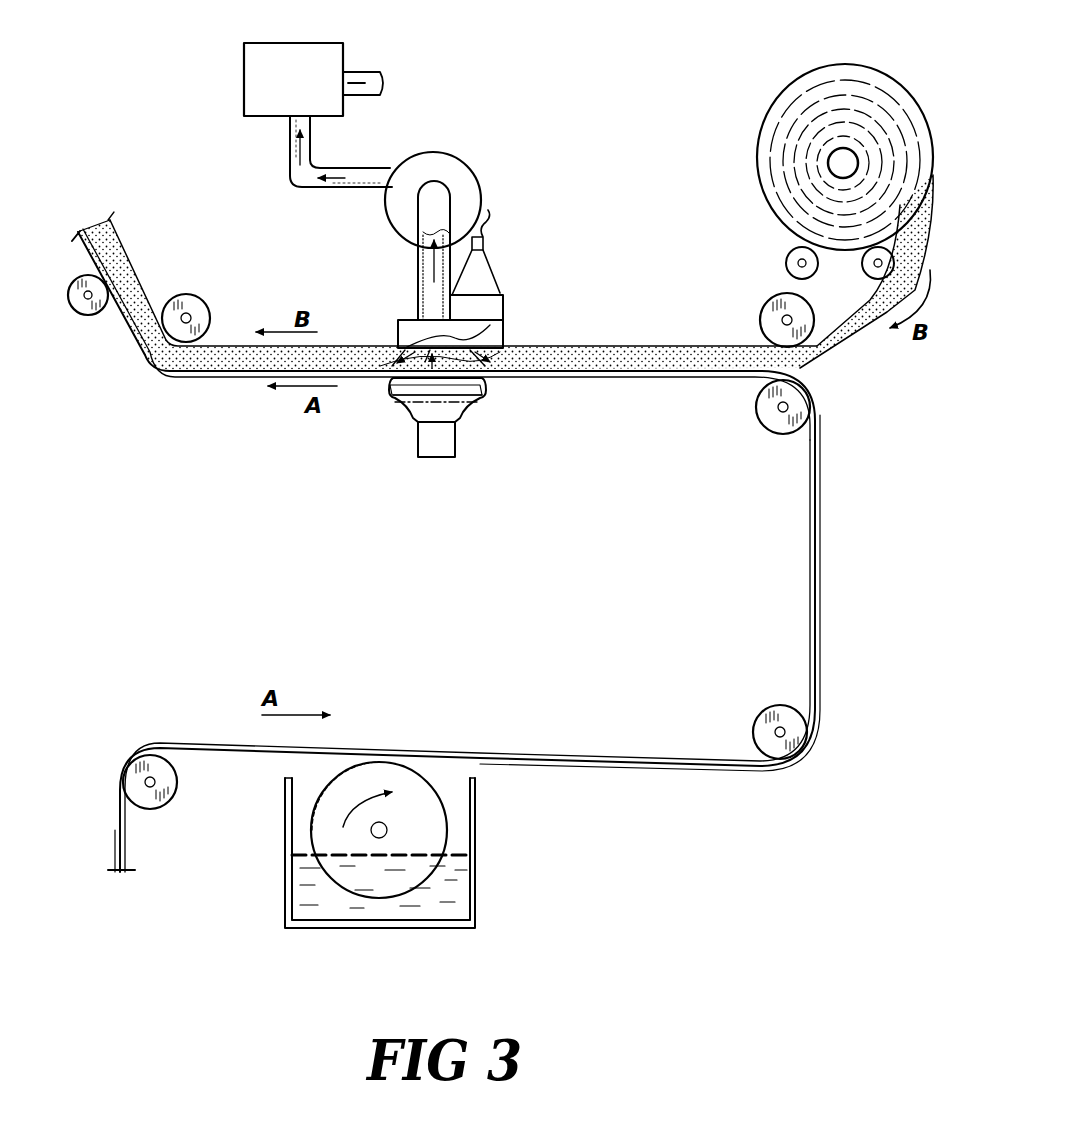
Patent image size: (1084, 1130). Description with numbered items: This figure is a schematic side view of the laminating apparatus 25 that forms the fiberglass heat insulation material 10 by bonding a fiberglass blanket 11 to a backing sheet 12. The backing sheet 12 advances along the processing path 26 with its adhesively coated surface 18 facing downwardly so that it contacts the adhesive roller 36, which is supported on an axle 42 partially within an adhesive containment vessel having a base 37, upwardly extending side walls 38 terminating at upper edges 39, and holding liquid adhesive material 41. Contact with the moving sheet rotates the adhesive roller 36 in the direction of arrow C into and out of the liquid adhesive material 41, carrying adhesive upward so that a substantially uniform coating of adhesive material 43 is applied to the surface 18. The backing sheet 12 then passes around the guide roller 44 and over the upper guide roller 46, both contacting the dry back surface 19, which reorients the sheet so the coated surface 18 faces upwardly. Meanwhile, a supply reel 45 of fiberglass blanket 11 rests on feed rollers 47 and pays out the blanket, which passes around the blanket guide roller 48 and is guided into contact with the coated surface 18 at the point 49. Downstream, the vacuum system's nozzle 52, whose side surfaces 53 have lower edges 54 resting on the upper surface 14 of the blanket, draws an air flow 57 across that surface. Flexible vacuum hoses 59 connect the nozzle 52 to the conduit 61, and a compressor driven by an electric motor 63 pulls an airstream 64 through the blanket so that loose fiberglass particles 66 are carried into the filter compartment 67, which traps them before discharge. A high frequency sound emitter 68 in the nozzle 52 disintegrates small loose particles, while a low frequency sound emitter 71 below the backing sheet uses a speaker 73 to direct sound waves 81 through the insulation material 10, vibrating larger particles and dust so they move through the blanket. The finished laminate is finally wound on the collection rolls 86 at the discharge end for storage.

The fiberglass heat insulation material 10 is at (232, 340).
The fiberglass blanket 11 is at (849, 135).
The backing sheet 12 is at (806, 495).
The upper surface 14 is at (120, 257).
The adhesively coated surface 18 is at (712, 378).
The back surface 19 is at (388, 762).
The laminating apparatus 25 is at (439, 842).
The processing path 26 is at (140, 746).
The adhesive roller 36 is at (401, 804).
The base 37 is at (385, 928).
The side walls 38 is at (475, 848).
The upper edges 39 is at (288, 778).
The liquid adhesive material 41 is at (330, 914).
The axle 42 is at (387, 830).
The coating of adhesive material 43 is at (826, 452).
The guide roller 44 is at (755, 730).
The supply reel 45 is at (856, 100).
The upper guide roller 46 is at (765, 420).
The feed rollers 47 is at (785, 258).
The blanket guide roller 48 is at (760, 333).
The point of contact 49 is at (806, 371).
The nozzle 52 is at (412, 320).
The side surfaces 53 is at (508, 318).
The lower edge 54 is at (460, 332).
The air flow 57 is at (390, 222).
The vacuum hoses 59 is at (447, 280).
The conduit 61 is at (445, 165).
The electric motor 63 is at (458, 188).
The airstream 64 is at (325, 172).
The loose fiberglass particles 66 is at (423, 290).
The filter compartment 67 is at (244, 84).
The high frequency sound emitter 68 is at (500, 288).
The low frequency sound emitter 71 is at (406, 464).
The speaker 73 is at (426, 457).
The sound waves 81 is at (482, 393).
The collection rolls 86 is at (168, 340).